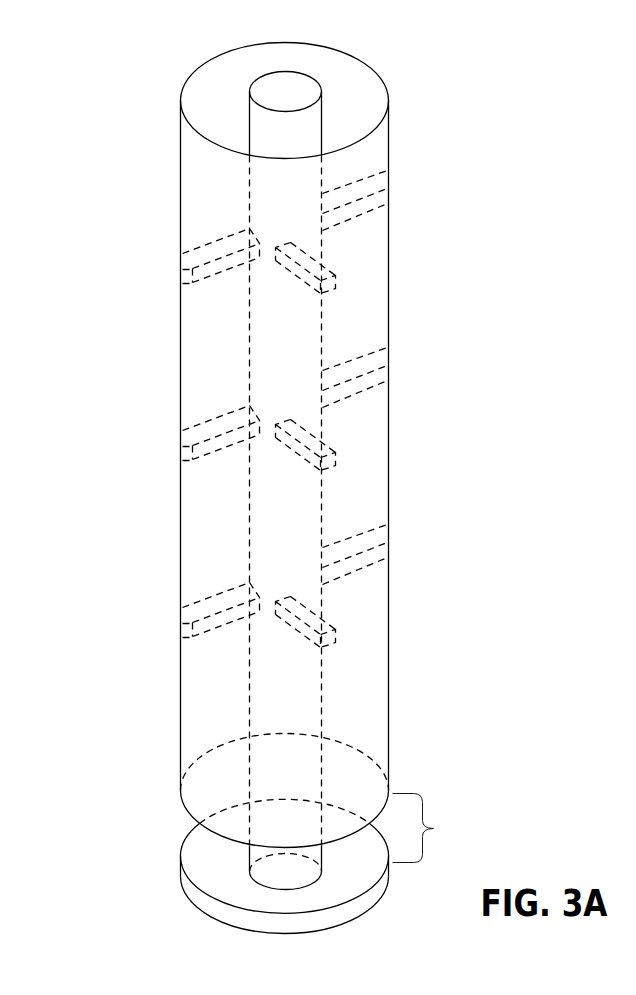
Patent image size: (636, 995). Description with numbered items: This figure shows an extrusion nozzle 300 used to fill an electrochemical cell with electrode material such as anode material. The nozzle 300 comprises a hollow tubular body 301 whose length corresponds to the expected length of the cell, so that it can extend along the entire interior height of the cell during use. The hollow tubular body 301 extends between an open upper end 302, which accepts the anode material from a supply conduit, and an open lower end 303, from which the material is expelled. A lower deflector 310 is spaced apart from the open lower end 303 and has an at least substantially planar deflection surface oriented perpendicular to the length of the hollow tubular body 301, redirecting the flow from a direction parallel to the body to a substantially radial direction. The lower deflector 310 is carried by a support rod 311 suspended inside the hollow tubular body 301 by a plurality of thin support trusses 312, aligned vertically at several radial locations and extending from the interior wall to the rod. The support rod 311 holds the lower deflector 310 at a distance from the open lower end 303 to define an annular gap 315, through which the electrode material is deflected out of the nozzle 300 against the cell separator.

The nozzle 300 is at (438, 108).
The hollow tubular body 301 is at (388, 272).
The open upper end 302 is at (193, 132).
The open lower end 303 is at (182, 810).
The lower deflector 310 is at (360, 907).
The support rod 311 is at (313, 528).
The support trusses 312 is at (368, 557).
The annular gap 315 is at (433, 828).